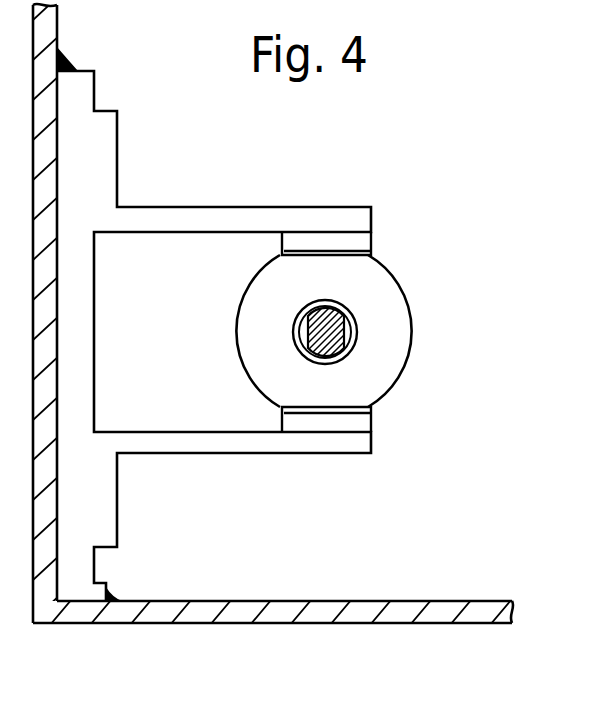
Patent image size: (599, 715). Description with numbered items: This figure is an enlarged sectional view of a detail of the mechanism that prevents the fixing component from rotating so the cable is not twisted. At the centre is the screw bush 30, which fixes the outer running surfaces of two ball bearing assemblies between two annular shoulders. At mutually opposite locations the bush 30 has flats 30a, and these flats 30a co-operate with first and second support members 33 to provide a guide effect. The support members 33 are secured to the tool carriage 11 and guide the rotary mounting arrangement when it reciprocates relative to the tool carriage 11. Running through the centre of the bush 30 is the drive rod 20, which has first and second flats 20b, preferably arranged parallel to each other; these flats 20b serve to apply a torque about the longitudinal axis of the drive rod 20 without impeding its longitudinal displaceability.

The tool carriage 11 is at (45, 30).
The support members 33 is at (198, 220).
The screw bush 30 is at (384, 290).
The flats 30a is at (325, 255).
The flats 20b is at (296, 331).
The drive rod 20 is at (330, 347).